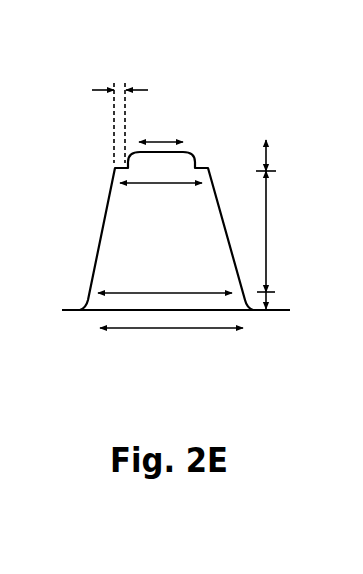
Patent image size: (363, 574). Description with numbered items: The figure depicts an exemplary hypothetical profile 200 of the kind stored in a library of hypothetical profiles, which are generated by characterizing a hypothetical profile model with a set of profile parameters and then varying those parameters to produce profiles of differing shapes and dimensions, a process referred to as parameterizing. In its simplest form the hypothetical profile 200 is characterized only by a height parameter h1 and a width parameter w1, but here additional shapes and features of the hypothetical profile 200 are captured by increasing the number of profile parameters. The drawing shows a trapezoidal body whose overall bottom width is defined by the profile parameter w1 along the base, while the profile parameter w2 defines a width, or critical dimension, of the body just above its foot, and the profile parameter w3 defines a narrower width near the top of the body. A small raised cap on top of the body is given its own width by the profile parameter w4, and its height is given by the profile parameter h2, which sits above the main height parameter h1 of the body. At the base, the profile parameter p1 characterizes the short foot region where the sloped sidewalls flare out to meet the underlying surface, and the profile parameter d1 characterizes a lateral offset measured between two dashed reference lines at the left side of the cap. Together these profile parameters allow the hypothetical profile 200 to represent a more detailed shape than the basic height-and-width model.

The hypothetical profile 200 is at (205, 128).
The profile parameter d1 is at (120, 106).
The profile parameter w4 is at (161, 123).
The profile parameter w3 is at (161, 200).
The profile parameter w2 is at (165, 276).
The profile parameter w1 is at (171, 360).
The profile parameter h2 is at (282, 155).
The profile parameter h1 is at (282, 231).
The profile parameter p1 is at (287, 292).